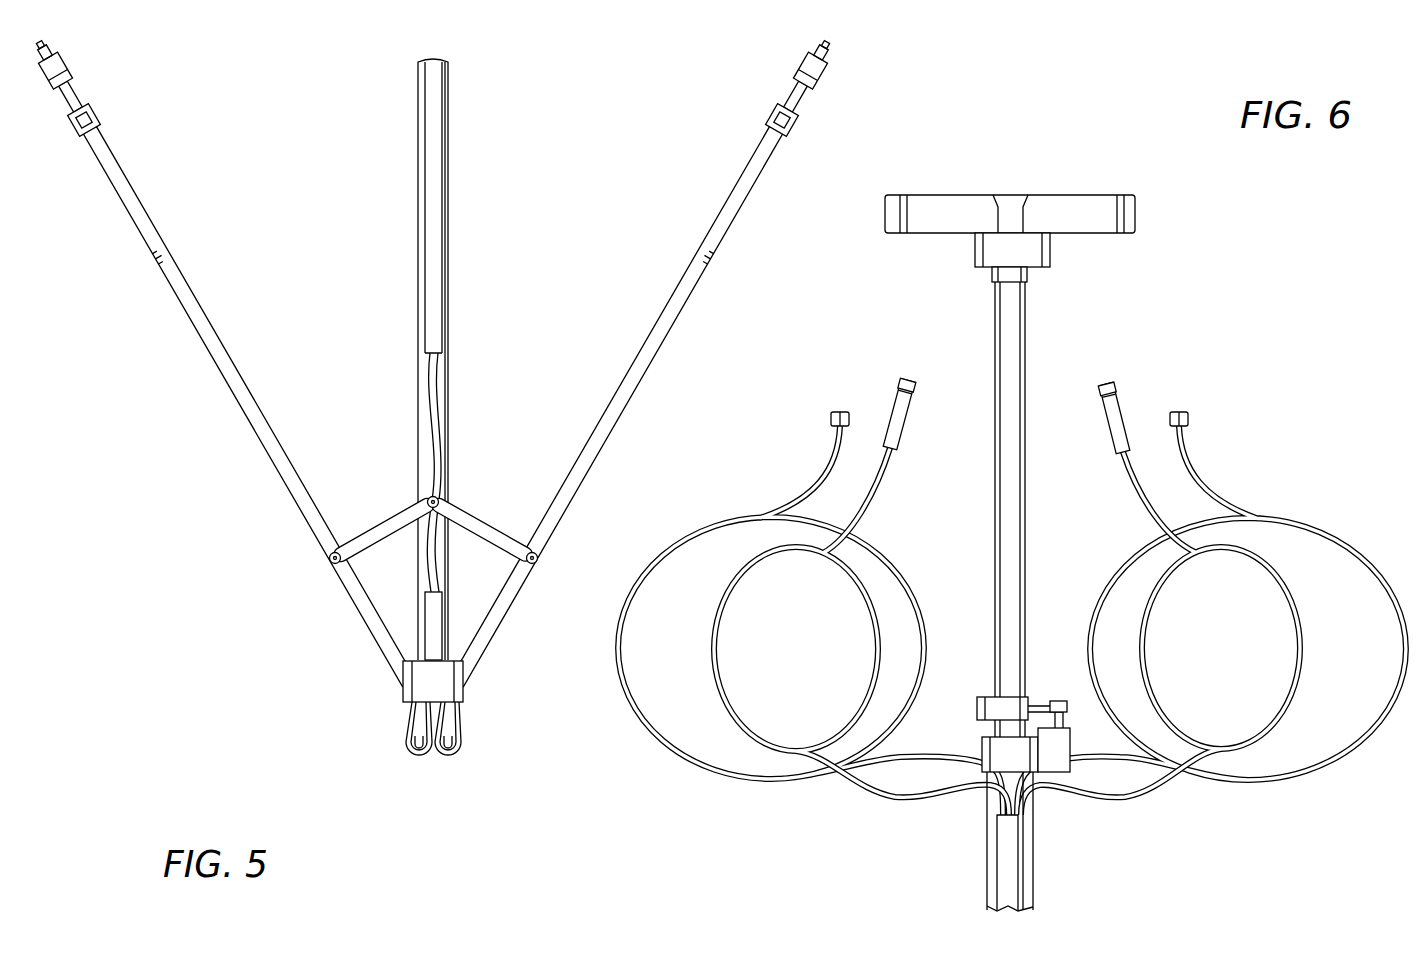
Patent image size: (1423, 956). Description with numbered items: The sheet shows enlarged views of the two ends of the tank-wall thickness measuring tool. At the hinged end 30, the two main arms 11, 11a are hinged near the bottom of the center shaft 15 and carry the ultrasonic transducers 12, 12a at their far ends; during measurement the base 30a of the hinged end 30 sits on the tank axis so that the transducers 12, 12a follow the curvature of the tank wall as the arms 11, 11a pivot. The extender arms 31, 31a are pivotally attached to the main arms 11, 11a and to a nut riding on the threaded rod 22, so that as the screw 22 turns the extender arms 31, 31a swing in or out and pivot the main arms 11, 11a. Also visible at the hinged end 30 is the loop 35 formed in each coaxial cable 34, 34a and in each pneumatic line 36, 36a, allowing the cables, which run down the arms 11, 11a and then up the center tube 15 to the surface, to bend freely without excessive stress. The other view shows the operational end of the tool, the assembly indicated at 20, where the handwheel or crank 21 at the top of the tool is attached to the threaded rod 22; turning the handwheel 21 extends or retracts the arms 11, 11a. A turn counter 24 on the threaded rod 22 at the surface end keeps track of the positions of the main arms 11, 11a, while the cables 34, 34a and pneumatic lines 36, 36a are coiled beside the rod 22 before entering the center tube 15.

In FIG. 5, the arm 11 is at (165, 250).
In FIG. 5, the arm 11a is at (700, 244).
In FIG. 5, the transducer 12 is at (47, 46).
In FIG. 5, the transducer 12a is at (830, 46).
In FIG. 5, the center shaft 15 is at (450, 114).
In FIG. 6, the center shaft 15 is at (1036, 882).
In FIG. 6, the positioning assembly 20 is at (995, 526).
In FIG. 6, the handwheel 21 is at (1088, 195).
In FIG. 6, the threaded rod 22 is at (992, 320).
In FIG. 6, the turn counter 24 is at (1056, 752).
In FIG. 5, the hinged end 30 is at (374, 628).
In FIG. 5, the base 30a is at (463, 703).
In FIG. 5, the extender arm 31 is at (392, 522).
In FIG. 5, the extender arm 31a is at (492, 522).
In FIG. 6, the coaxial cable 34 is at (912, 778).
In FIG. 6, the coaxial cable 34a is at (1243, 748).
In FIG. 5, the loop 35 is at (398, 762).
In FIG. 6, the pneumatic line 36 is at (830, 782).
In FIG. 6, the pneumatic line 36a is at (1330, 762).